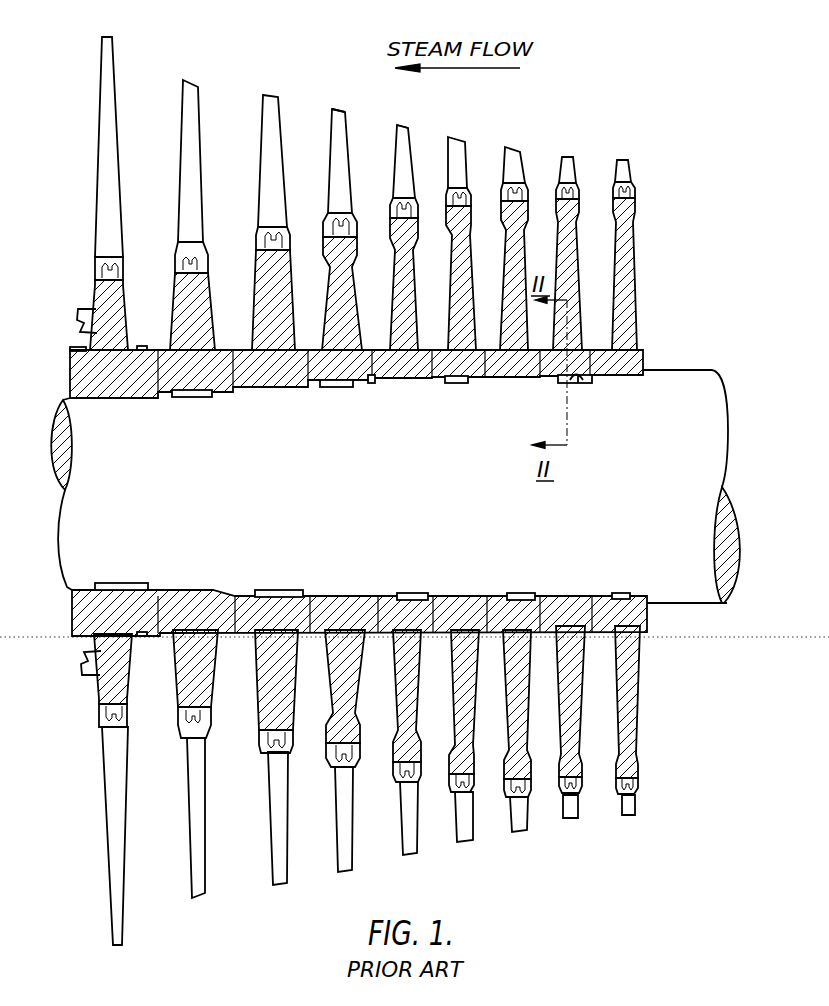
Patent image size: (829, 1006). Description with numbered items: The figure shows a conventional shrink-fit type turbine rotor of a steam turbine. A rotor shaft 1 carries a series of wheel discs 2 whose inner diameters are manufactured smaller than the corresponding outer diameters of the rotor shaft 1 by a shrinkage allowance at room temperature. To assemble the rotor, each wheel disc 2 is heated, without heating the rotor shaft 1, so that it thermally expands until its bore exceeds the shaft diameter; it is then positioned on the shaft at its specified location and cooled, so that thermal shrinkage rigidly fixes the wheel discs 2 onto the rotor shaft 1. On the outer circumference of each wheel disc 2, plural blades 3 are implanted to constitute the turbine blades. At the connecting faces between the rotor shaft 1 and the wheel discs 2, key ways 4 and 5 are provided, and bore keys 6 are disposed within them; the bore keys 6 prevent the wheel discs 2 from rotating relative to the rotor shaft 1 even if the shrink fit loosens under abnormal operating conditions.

The rotor shaft 1 is at (682, 382).
The wheel disc 2 is at (575, 238).
The blade 3 is at (397, 135).
The key way 4 is at (582, 383).
The key way 5 is at (577, 372).
The bore key 6 is at (342, 387).